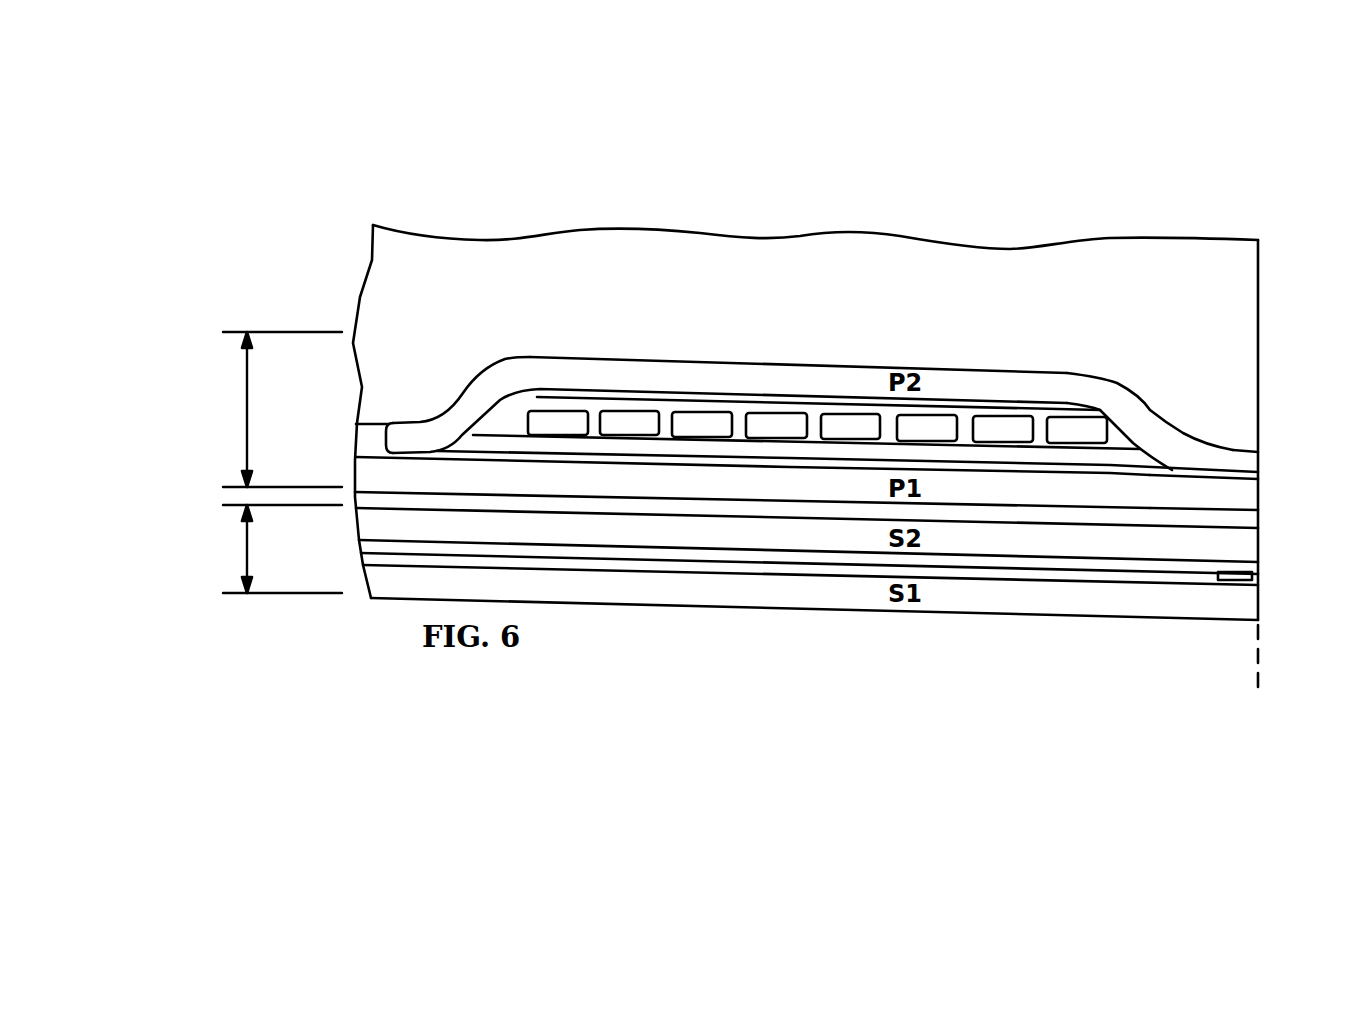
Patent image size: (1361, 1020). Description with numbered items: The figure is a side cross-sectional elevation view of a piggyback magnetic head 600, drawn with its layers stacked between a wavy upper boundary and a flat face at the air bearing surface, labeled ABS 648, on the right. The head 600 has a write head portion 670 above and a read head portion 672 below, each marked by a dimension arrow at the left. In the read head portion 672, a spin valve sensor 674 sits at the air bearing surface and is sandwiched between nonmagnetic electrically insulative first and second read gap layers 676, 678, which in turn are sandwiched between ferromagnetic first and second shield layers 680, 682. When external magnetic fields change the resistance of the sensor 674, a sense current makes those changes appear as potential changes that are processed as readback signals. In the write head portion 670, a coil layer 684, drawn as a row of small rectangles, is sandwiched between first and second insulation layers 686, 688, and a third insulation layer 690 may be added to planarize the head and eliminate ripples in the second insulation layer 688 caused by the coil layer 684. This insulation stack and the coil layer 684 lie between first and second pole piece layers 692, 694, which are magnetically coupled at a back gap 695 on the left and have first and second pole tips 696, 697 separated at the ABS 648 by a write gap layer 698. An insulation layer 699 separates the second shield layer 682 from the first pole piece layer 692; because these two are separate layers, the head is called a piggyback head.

The piggyback magnetic head 600 is at (327, 266).
The air bearing surface 648 is at (1253, 647).
The write head portion 670 is at (245, 408).
The read head portion 672 is at (245, 547).
The spin valve sensor 674 is at (1252, 577).
The first read gap layer 676 is at (810, 577).
The second read gap layer 678 is at (741, 552).
The first shield layer 680 is at (940, 600).
The second shield layer 682 is at (1068, 543).
The coil layer 684 is at (853, 430).
The first insulation layer 686 is at (643, 445).
The second insulation layer 688 is at (1122, 440).
The third insulation layer 690 is at (558, 390).
The first pole piece layer 692 is at (1147, 497).
The second pole piece layer 694 is at (982, 373).
The back gap 695 is at (392, 423).
The first pole tip 696 is at (1258, 497).
The second pole tip 697 is at (1257, 461).
The write gap layer 698 is at (1258, 476).
The insulation layer 699 is at (1003, 517).